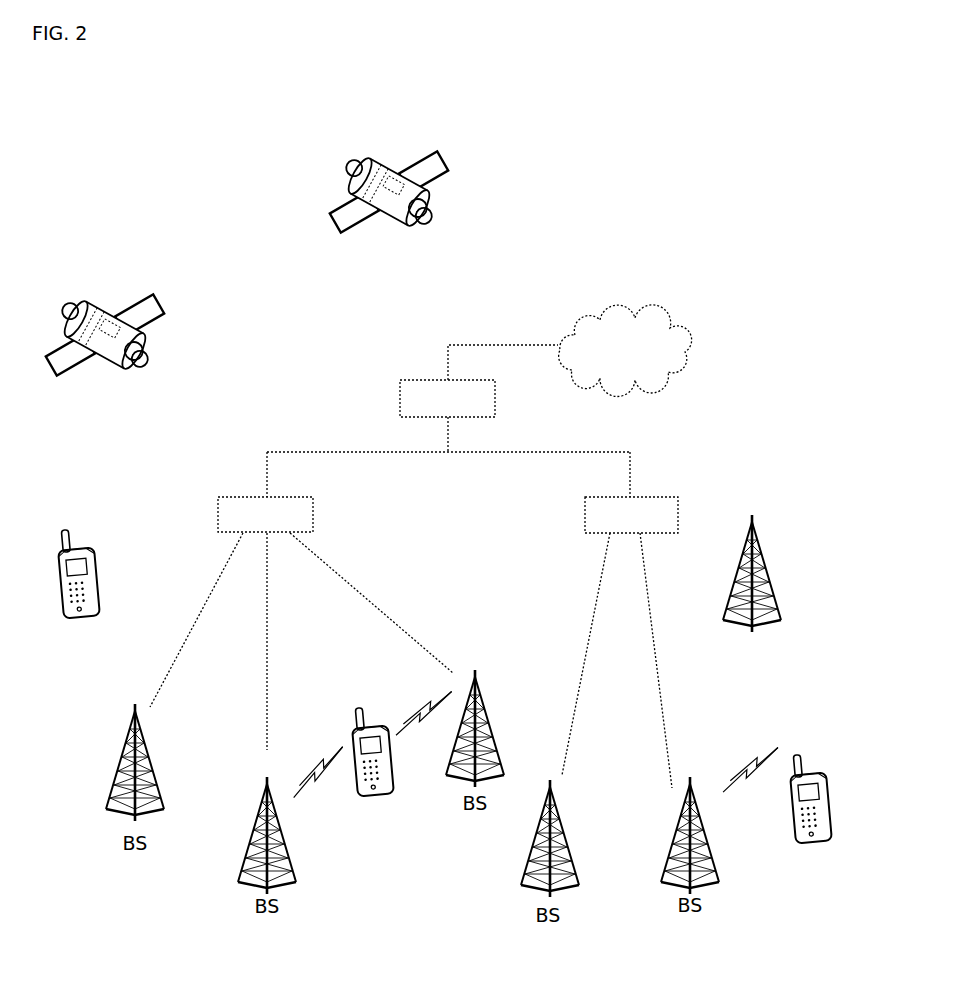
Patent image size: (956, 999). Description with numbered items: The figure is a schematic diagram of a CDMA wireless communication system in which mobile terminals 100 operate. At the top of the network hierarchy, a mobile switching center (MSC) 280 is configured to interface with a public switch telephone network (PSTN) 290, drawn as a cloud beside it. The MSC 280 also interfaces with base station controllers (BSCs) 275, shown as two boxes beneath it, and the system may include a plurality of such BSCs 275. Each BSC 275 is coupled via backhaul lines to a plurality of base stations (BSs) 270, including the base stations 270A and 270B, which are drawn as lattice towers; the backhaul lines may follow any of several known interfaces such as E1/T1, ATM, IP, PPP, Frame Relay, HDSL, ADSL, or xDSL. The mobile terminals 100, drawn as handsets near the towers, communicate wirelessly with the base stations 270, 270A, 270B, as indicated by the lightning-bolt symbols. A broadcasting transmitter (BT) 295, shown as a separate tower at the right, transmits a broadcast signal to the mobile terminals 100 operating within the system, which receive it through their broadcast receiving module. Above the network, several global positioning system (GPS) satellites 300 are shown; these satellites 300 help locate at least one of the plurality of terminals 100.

The mobile terminal 100 is at (102, 592).
The base station 270 is at (122, 813).
The base station 270A is at (290, 890).
The base station 270B is at (490, 730).
The base station controller 275 is at (243, 497).
The mobile switching center 280 is at (417, 380).
The public switch telephone network 290 is at (687, 343).
The broadcasting transmitter 295 is at (765, 572).
The GPS satellite 300 is at (100, 300).